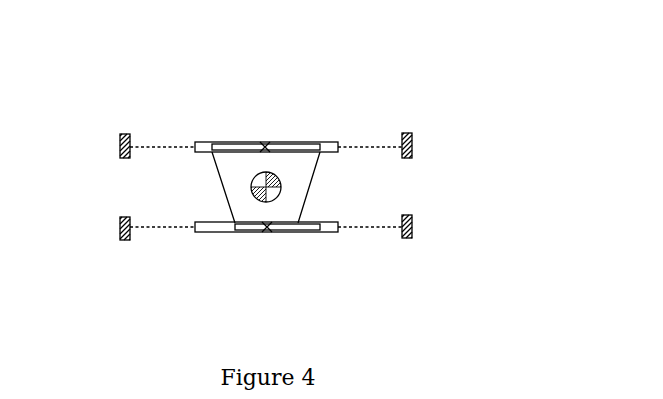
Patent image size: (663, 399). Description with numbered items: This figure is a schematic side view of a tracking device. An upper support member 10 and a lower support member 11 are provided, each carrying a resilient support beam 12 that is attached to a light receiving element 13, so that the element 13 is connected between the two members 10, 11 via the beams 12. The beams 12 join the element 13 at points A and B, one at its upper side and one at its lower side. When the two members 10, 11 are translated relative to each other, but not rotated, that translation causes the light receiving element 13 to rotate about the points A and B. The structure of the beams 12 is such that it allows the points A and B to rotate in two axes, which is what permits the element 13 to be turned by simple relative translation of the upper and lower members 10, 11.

The upper support member 10 is at (119, 146).
The lower support member 11 is at (119, 229).
The resilient support beams 12 is at (367, 137).
The light receiving element 13 is at (202, 187).
The point A is at (285, 137).
The point B is at (280, 240).